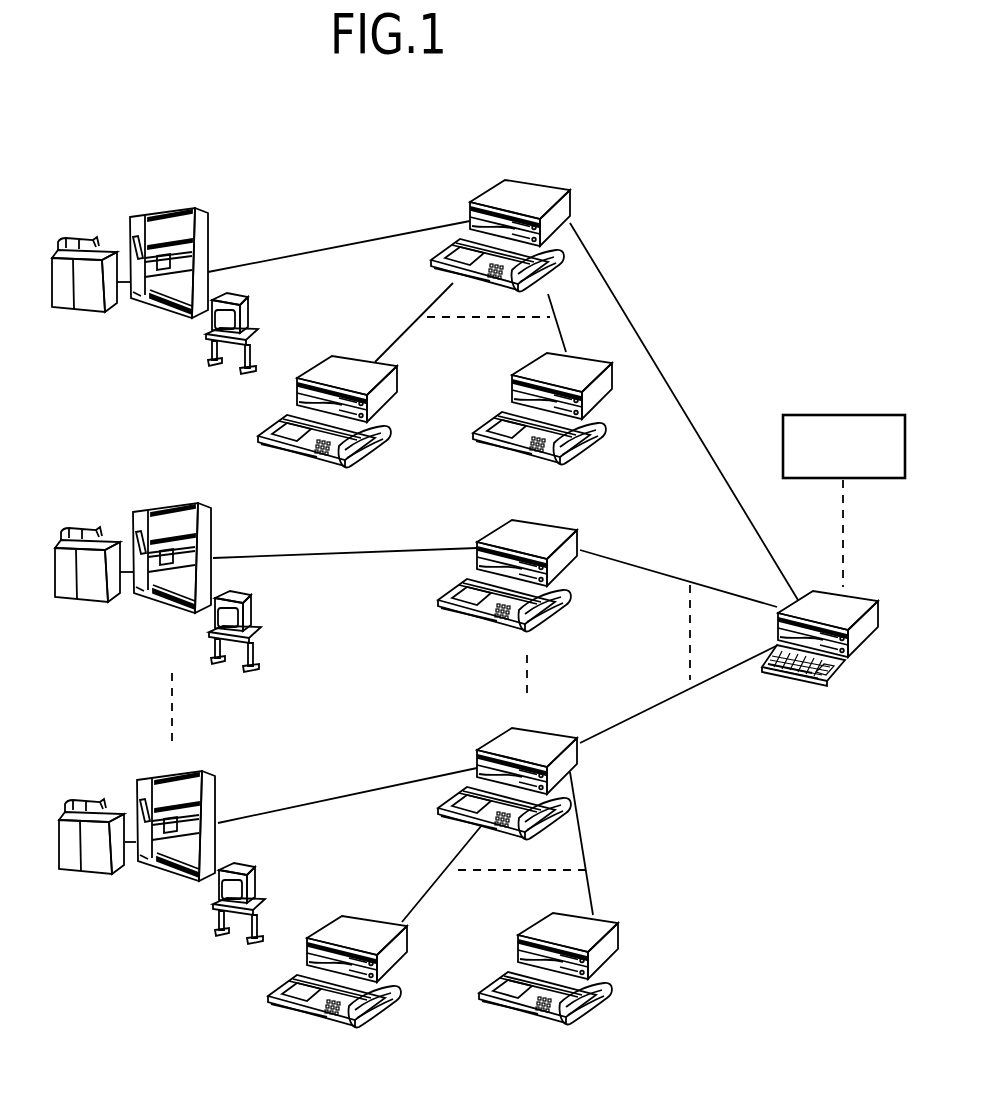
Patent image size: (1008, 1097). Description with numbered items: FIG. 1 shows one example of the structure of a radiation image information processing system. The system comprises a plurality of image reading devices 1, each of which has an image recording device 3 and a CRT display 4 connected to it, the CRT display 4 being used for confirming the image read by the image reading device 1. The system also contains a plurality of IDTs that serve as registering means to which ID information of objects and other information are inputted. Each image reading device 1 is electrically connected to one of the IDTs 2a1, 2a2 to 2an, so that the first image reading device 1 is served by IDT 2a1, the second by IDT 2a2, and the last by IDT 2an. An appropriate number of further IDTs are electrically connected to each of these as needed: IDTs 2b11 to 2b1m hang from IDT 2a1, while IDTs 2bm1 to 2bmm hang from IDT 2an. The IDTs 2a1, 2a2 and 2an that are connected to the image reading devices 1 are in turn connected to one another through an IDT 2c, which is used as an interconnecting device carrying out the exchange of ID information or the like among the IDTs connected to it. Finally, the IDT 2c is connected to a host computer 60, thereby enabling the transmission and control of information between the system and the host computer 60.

The image reading device 1 is at (188, 206).
The image recording device 3 is at (82, 236).
The CRT display 4 is at (247, 296).
The IDT 2a1 is at (573, 188).
The IDT 2a2 is at (540, 523).
The IDT 2an is at (547, 735).
The IDT 2b11 is at (345, 357).
The IDT 2b1m is at (577, 353).
The IDT 2bm1 is at (362, 922).
The IDT 2bmm is at (553, 922).
The IDT 2c is at (856, 592).
The host computer 60 is at (833, 414).